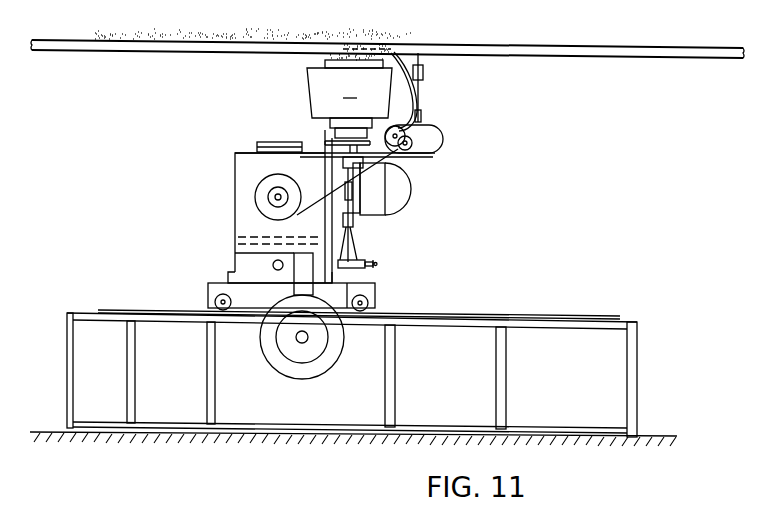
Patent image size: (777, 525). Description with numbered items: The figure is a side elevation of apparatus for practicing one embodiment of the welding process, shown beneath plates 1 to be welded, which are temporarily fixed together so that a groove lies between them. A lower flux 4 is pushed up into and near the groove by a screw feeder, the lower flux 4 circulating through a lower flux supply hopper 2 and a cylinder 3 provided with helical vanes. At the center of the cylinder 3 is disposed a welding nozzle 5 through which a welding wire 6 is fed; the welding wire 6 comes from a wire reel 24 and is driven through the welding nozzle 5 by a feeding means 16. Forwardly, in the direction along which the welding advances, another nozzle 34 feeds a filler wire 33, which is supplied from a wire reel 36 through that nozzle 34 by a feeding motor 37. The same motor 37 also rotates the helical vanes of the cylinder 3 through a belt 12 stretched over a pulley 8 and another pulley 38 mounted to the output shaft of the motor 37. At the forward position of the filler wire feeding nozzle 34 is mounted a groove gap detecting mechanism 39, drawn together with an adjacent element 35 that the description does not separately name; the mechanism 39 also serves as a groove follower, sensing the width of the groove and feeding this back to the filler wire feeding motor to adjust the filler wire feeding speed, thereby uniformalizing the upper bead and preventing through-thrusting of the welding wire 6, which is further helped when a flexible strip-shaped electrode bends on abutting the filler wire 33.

The plates to be welded 1 is at (527, 48).
The lower flux supply hopper 2 is at (307, 80).
The cylinder 3 is at (390, 47).
The lower flux 4 is at (365, 47).
The welding nozzle 5 is at (342, 47).
The welding wire 6 is at (322, 33).
The pulley 8 is at (327, 143).
The belt 12 is at (268, 140).
The feeding means 16 is at (392, 203).
The wire reel 24 is at (322, 365).
The filler wire 33 is at (375, 182).
The nozzle 34 is at (423, 80).
The guide roller assembly 35 is at (437, 143).
The wire reel 36 is at (264, 197).
The feeding motor 37 is at (235, 170).
The pulley 38 is at (288, 140).
The groove gap detecting mechanism 39 is at (423, 103).